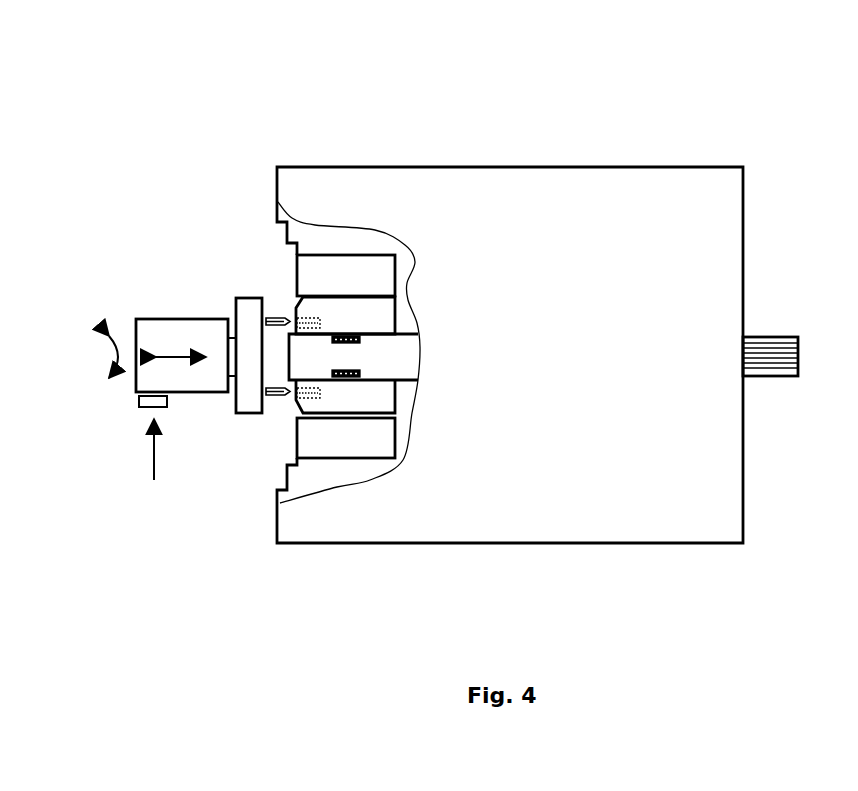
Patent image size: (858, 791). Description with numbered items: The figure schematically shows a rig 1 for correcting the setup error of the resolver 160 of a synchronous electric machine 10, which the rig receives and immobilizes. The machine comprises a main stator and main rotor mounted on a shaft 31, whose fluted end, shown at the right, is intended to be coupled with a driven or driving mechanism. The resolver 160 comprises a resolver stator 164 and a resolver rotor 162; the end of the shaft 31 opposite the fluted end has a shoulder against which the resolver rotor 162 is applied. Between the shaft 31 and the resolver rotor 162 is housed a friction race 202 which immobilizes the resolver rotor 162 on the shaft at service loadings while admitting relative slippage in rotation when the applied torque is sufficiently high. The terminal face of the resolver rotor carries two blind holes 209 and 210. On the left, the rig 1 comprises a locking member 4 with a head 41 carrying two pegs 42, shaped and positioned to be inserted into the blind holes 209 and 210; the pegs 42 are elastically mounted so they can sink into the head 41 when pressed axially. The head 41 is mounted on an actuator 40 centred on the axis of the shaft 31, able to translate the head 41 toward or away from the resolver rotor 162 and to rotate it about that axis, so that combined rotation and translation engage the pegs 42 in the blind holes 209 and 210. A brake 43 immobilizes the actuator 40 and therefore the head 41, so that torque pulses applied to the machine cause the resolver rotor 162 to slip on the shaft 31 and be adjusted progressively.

The rig 1 is at (470, 74).
The electric machine 10 is at (597, 167).
The shaft 31 is at (402, 353).
The locking member 4 is at (172, 343).
The actuator 40 is at (153, 330).
The head 41 is at (253, 312).
The pegs 42 is at (273, 316).
The brake 43 is at (139, 401).
The resolver 160 is at (261, 411).
The resolver rotor 162 is at (305, 408).
The resolver stator 164 is at (307, 440).
The friction race 202 is at (347, 336).
The blind hole 209 is at (296, 308).
The blind hole 210 is at (298, 402).